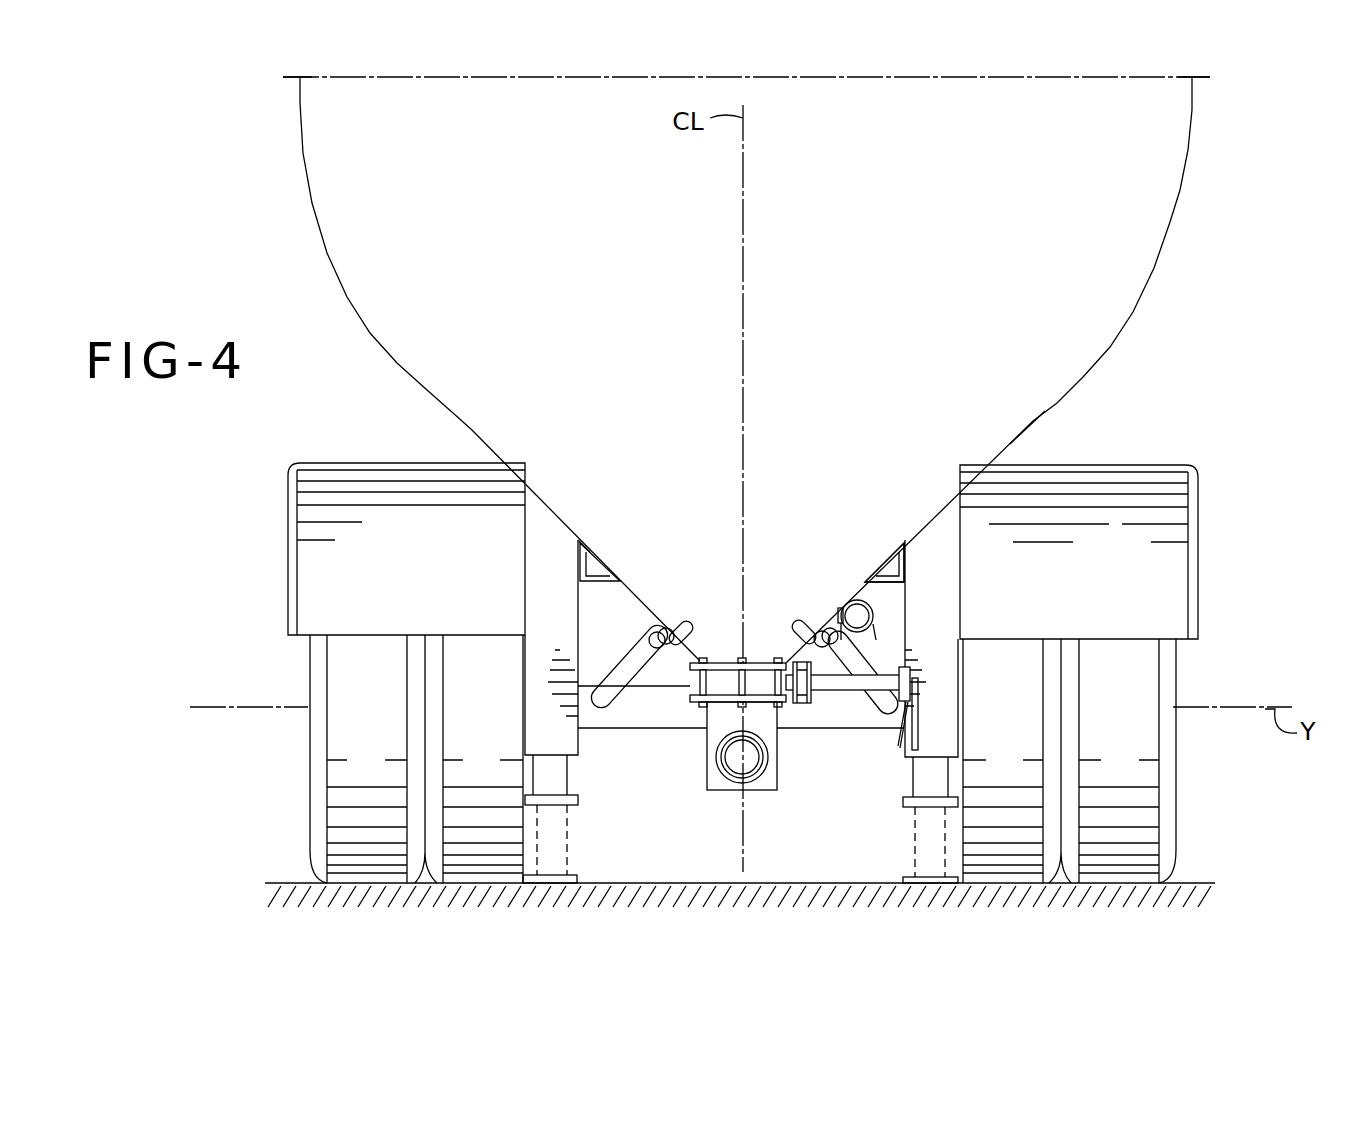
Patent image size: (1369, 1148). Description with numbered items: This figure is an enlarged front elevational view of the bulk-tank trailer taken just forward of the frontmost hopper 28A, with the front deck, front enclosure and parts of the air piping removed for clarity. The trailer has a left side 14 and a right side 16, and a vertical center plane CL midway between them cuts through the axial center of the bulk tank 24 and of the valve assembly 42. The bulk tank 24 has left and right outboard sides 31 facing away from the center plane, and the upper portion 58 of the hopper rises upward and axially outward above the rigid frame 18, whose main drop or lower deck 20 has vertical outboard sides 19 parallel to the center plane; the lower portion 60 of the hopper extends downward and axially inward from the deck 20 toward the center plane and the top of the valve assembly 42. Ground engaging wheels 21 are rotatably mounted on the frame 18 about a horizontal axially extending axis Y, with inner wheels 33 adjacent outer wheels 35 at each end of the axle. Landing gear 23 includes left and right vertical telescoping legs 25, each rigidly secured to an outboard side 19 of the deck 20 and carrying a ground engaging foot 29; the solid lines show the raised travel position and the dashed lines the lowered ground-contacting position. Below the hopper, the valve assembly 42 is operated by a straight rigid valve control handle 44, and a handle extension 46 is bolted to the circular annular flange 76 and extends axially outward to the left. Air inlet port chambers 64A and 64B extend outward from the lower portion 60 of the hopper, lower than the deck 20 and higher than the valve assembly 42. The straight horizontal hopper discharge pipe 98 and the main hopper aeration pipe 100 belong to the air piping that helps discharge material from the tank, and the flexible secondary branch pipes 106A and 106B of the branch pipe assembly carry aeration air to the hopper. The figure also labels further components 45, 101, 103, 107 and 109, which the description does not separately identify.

The left side 14 is at (1222, 592).
The right side 16 is at (588, 706).
The rigid frame 18 is at (489, 536).
The main drop or lower deck 20 is at (576, 549).
The vertical outboard sides 19 is at (580, 562).
The ground engaging wheels 21 is at (448, 790).
The landing gear 23 is at (525, 602).
The bulk tank 24 is at (1172, 224).
The vertical legs 25 is at (535, 723).
The frontmost hopper 28A is at (1104, 430).
The upper portion 58 is at (1044, 413).
The ground engaging foot 29 is at (553, 808).
The outboard sides 31 is at (300, 104).
The inner wheels 33 is at (548, 836).
The outer wheels 35 is at (310, 752).
The valve assembly 42 is at (718, 657).
The valve control handle 44 is at (920, 692).
The flange 45 is at (917, 710).
The handle extension 46 is at (857, 696).
The lower portion 60 is at (618, 594).
The air inlet port chamber 64A is at (808, 640).
The air inlet port chamber 64B is at (675, 615).
The circular annular flange 76 is at (800, 703).
The hopper discharge pipe 98 is at (733, 780).
The main hopper aeration pipe 100 is at (878, 634).
The pivot pin 101 is at (830, 615).
The mounting bracket 103 is at (886, 585).
The secondary branch pipe 106A is at (849, 723).
The bushing 109 is at (830, 647).
The secondary branch pipe 106B is at (642, 562).
The bushing 107 is at (650, 640).